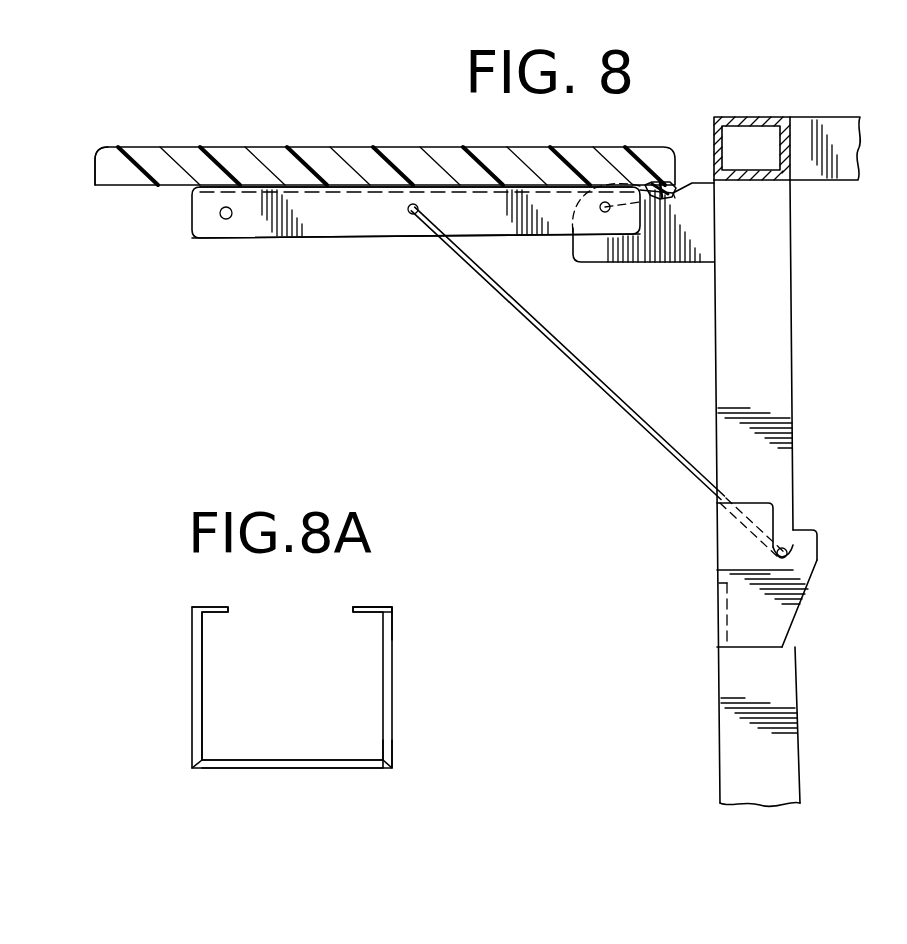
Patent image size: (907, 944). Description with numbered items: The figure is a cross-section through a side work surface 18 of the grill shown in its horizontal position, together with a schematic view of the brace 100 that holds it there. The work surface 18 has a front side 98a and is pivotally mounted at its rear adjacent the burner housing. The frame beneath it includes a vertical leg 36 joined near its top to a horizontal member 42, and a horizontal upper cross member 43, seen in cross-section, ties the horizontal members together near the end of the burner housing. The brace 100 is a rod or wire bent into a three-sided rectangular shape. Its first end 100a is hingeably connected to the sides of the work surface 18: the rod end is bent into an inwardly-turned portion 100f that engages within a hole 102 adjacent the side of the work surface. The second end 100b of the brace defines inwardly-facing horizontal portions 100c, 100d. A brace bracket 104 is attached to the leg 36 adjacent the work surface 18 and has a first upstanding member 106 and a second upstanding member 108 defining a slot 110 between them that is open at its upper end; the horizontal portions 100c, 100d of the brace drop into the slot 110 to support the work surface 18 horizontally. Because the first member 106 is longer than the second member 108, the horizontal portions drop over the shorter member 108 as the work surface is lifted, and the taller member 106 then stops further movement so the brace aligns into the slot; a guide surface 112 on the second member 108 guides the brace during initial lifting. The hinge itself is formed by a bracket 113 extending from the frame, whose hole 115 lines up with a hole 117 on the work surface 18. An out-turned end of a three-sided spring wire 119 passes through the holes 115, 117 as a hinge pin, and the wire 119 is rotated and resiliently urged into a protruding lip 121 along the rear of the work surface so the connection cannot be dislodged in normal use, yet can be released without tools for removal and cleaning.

In FIG. 8, the work surface 18 is at (247, 147).
In FIG. 8, the front side of work surface 98a is at (96, 176).
In FIG. 8, the brace 100 is at (586, 381).
In FIG. 8A, the brace 100 is at (392, 668).
In FIG. 8, the first end of brace 100a is at (416, 237).
In FIG. 8A, the first end of brace 100a is at (389, 606).
In FIG. 8, the second end of brace 100b is at (796, 534).
In FIG. 8A, the second end of brace 100b is at (333, 770).
In FIG. 8A, the horizontal portion 100c is at (204, 616).
In FIG. 8A, the horizontal portion 100d is at (388, 770).
In FIG. 8, the inwardly-turned portion 100f is at (380, 237).
In FIG. 8A, the inwardly-turned portion 100f is at (360, 615).
In FIG. 8, the hole 102 is at (412, 203).
In FIG. 8, the brace bracket 104 is at (740, 547).
In FIG. 8, the first upstanding member 106 is at (733, 534).
In FIG. 8, the second upstanding member 108 is at (800, 550).
In FIG. 8, the slot 110 is at (778, 540).
In FIG. 8, the guide surface 112 is at (795, 592).
In FIG. 8, the bracket 113 is at (700, 250).
In FIG. 8, the hole 115 is at (600, 216).
In FIG. 8, the hole 117 is at (608, 213).
In FIG. 8, the spring wire 119 is at (624, 172).
In FIG. 8, the protruding lip 121 is at (674, 190).
In FIG. 8, the vertical leg 36 is at (778, 715).
In FIG. 8, the horizontal member 42 is at (829, 128).
In FIG. 8, the horizontal upper cross member 43 is at (746, 124).